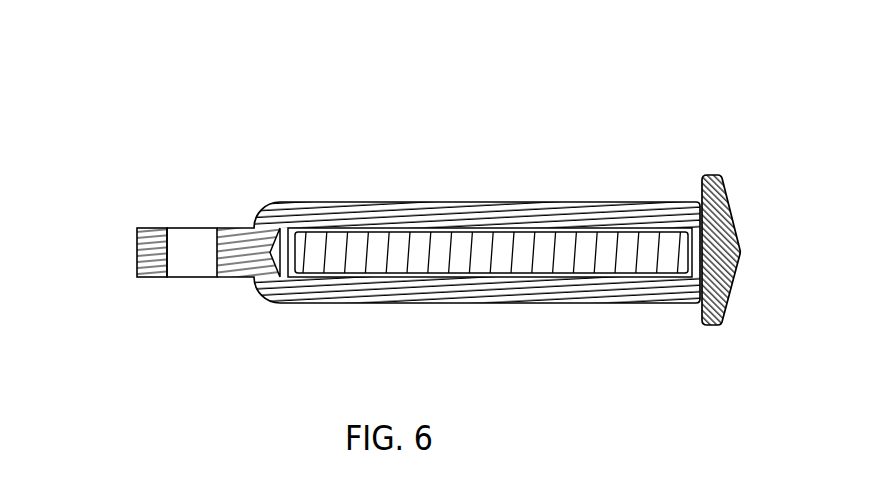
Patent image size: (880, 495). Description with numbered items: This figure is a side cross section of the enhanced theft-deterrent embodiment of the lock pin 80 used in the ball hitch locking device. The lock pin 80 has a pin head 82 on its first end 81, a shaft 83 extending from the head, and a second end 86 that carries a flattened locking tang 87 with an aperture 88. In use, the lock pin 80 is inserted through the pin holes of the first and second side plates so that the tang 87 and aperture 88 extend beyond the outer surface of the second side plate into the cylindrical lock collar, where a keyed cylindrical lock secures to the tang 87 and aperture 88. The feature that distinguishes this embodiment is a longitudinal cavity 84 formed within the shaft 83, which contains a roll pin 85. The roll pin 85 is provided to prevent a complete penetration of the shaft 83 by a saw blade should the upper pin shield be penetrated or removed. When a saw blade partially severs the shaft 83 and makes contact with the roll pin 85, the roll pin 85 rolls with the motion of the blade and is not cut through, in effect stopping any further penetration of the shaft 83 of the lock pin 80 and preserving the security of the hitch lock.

The lock pin 80 is at (443, 200).
The first end 81 is at (773, 272).
The pin head 82 is at (705, 325).
The shaft 83 is at (448, 200).
The longitudinal cavity 84 is at (491, 240).
The roll pin 85 is at (497, 253).
The second end 86 is at (131, 228).
The flattened locking tang 87 is at (147, 227).
The aperture 88 is at (182, 257).